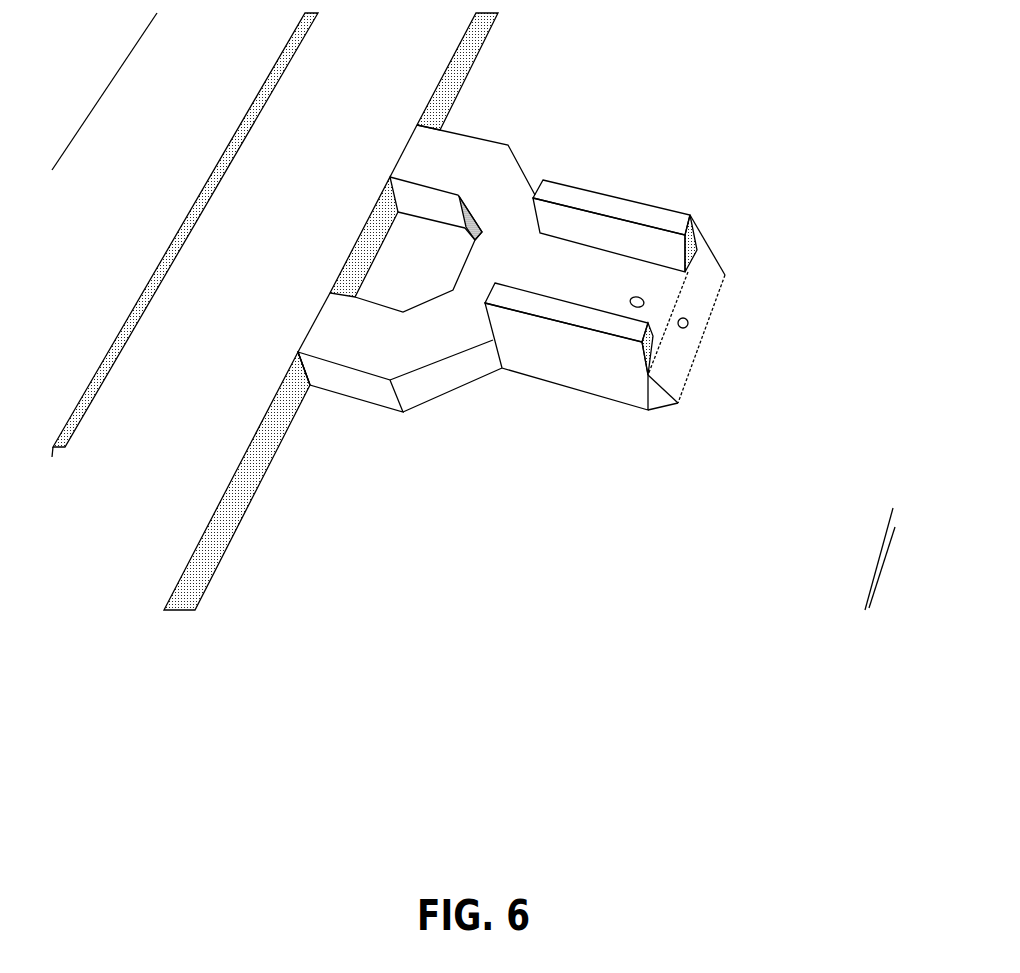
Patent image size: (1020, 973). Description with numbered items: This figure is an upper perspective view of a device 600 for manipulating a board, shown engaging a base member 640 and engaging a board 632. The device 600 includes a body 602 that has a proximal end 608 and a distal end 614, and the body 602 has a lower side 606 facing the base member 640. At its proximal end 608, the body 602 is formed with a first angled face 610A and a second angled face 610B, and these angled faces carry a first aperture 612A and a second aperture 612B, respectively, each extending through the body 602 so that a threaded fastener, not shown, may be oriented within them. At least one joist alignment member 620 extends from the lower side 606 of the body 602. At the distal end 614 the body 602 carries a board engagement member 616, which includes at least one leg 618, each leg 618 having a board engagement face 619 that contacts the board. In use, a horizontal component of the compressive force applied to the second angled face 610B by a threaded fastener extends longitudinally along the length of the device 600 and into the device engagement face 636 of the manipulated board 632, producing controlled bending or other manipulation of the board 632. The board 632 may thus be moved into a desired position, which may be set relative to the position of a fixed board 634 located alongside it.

The device for manipulating a board 600 is at (689, 110).
The body 602 is at (609, 157).
The lower side 606 is at (673, 280).
The proximal end 608 is at (820, 173).
The first angled face 610A is at (665, 410).
The second angled face 610B is at (713, 290).
The first aperture 612A is at (641, 304).
The second aperture 612B is at (688, 325).
The distal end 614 is at (514, 115).
The board engagement member 616 is at (440, 427).
The leg 618 is at (358, 356).
The board engagement face 619 is at (296, 350).
The joist alignment member 620 is at (562, 333).
The board 632 is at (327, 161).
The fixed board 634 is at (192, 116).
The device engagement face 636 is at (238, 502).
The base member 640 is at (627, 569).